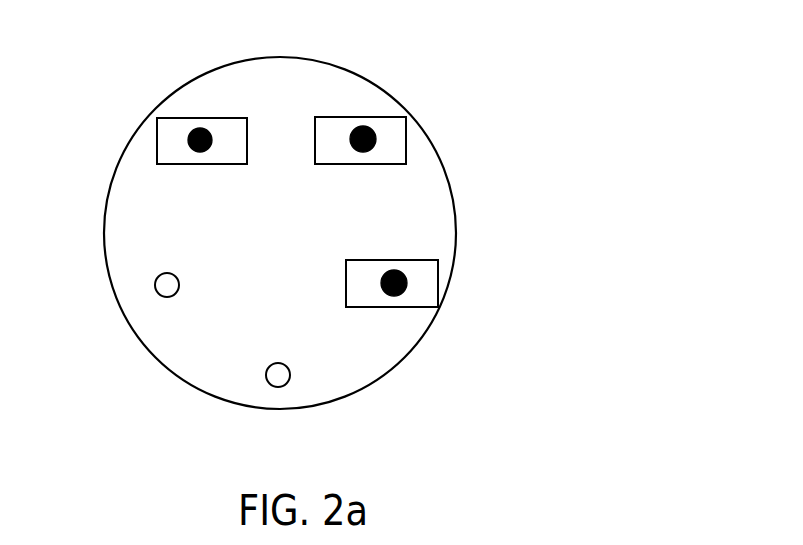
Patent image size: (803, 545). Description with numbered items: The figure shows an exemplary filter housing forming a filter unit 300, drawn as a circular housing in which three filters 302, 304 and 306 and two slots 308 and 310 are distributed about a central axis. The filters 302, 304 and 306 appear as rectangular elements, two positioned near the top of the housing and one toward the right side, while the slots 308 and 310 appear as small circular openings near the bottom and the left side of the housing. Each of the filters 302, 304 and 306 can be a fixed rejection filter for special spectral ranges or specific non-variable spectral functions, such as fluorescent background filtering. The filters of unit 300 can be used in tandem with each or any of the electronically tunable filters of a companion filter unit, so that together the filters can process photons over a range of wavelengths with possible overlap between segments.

The unit 300 is at (514, 83).
The filter 302 is at (358, 117).
The filter 304 is at (203, 118).
The filter 306 is at (420, 260).
The slot 308 is at (276, 387).
The slot 310 is at (156, 271).